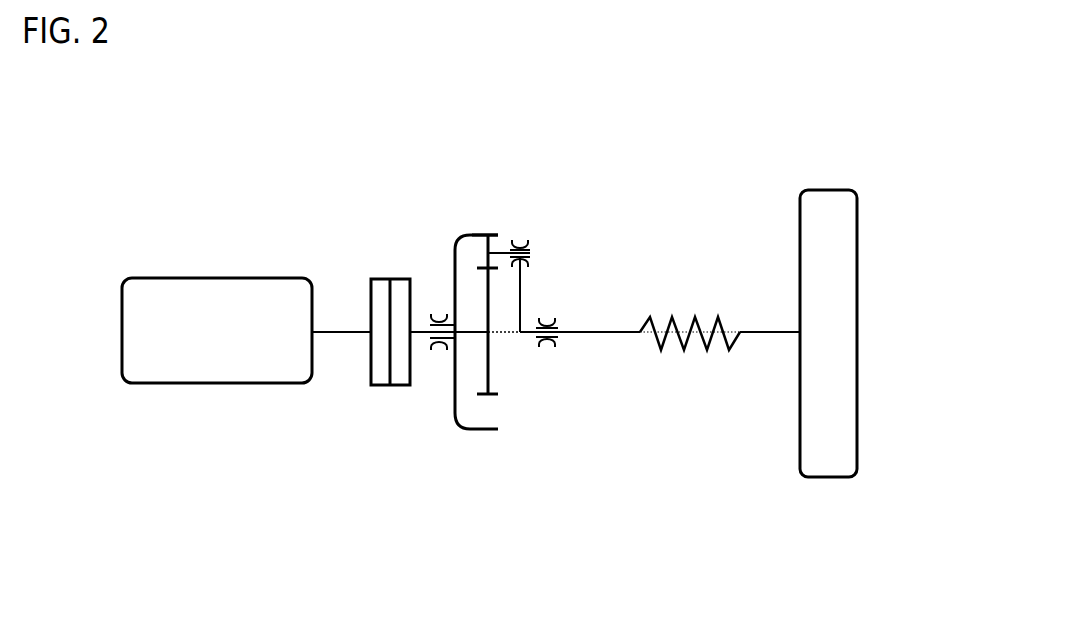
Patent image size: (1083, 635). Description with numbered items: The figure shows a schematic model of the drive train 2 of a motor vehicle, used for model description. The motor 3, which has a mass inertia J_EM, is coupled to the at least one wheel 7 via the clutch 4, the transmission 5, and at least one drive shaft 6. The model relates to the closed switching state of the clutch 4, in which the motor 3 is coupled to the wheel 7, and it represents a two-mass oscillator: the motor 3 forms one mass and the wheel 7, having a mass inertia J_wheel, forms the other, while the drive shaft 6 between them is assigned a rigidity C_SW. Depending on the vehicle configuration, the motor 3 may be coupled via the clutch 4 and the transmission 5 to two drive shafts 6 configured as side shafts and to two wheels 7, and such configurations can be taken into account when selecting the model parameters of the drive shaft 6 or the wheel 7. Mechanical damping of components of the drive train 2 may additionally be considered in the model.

The drive train 2 is at (865, 295).
The motor 3 is at (207, 383).
The clutch 4 is at (380, 387).
The transmission 5 is at (500, 410).
The drive shaft 6 is at (651, 325).
The wheel 7 is at (838, 442).